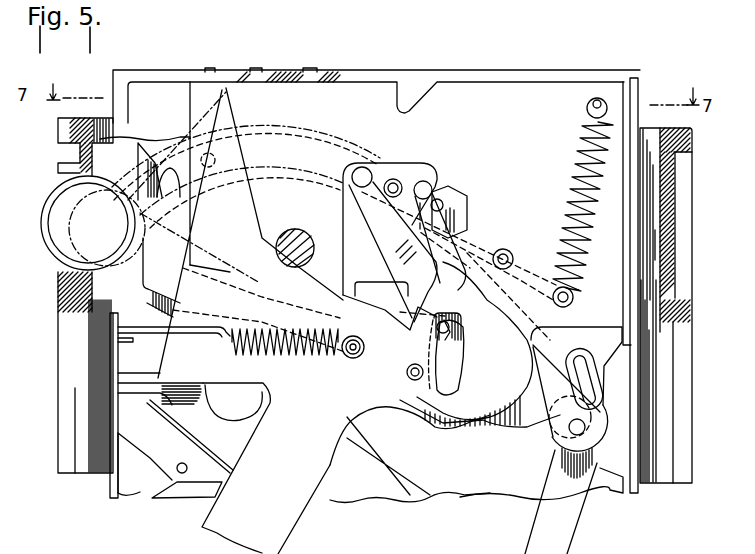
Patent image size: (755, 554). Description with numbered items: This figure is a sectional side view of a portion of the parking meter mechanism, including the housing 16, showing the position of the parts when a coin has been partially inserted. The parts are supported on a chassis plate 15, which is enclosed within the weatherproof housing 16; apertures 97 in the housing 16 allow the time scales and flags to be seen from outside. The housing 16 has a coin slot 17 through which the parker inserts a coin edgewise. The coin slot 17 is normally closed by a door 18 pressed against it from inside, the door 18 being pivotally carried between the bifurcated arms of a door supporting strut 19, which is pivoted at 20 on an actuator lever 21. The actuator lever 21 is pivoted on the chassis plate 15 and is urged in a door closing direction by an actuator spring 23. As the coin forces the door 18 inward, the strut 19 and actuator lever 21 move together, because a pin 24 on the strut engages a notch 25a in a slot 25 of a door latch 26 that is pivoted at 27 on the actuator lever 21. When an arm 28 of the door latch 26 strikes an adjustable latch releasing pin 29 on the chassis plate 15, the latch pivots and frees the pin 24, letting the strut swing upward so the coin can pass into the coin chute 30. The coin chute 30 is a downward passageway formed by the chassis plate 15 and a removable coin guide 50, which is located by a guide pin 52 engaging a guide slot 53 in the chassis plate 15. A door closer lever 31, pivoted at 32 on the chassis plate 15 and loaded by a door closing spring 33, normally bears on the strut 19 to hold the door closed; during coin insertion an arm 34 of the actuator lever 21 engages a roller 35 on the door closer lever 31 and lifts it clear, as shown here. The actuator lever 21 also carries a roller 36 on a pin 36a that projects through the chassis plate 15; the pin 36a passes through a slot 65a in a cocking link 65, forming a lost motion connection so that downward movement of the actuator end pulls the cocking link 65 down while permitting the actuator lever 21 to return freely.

The chassis plate 15 is at (501, 92).
The housing 16 is at (58, 342).
The coin slot 17 is at (62, 170).
The door 18 is at (140, 160).
The door supporting strut 19 is at (165, 277).
The pivot 20 is at (353, 352).
The actuator lever 21 is at (352, 416).
The actuator spring 23 is at (265, 350).
The pin 24 is at (458, 322).
The slot 25 is at (455, 367).
The notch 25a is at (440, 328).
The door latch 26 is at (513, 357).
The pivot 27 is at (413, 376).
The arm 28 is at (432, 185).
The latch releasing pin 29 is at (444, 204).
The coin chute 30 is at (175, 433).
The door closer lever 31 is at (382, 170).
The pivot 32 is at (503, 250).
The door closing spring 33 is at (568, 160).
The arm 34 is at (363, 170).
The roller 35 is at (420, 182).
The roller 36 is at (600, 418).
The pin 36a is at (574, 430).
The coin guide 50 is at (343, 488).
The guide pin 52 is at (182, 476).
The guide slot 53 is at (148, 488).
The cocking link 65 is at (567, 527).
The slot 65a is at (585, 358).
The apertures 97 is at (78, 390).